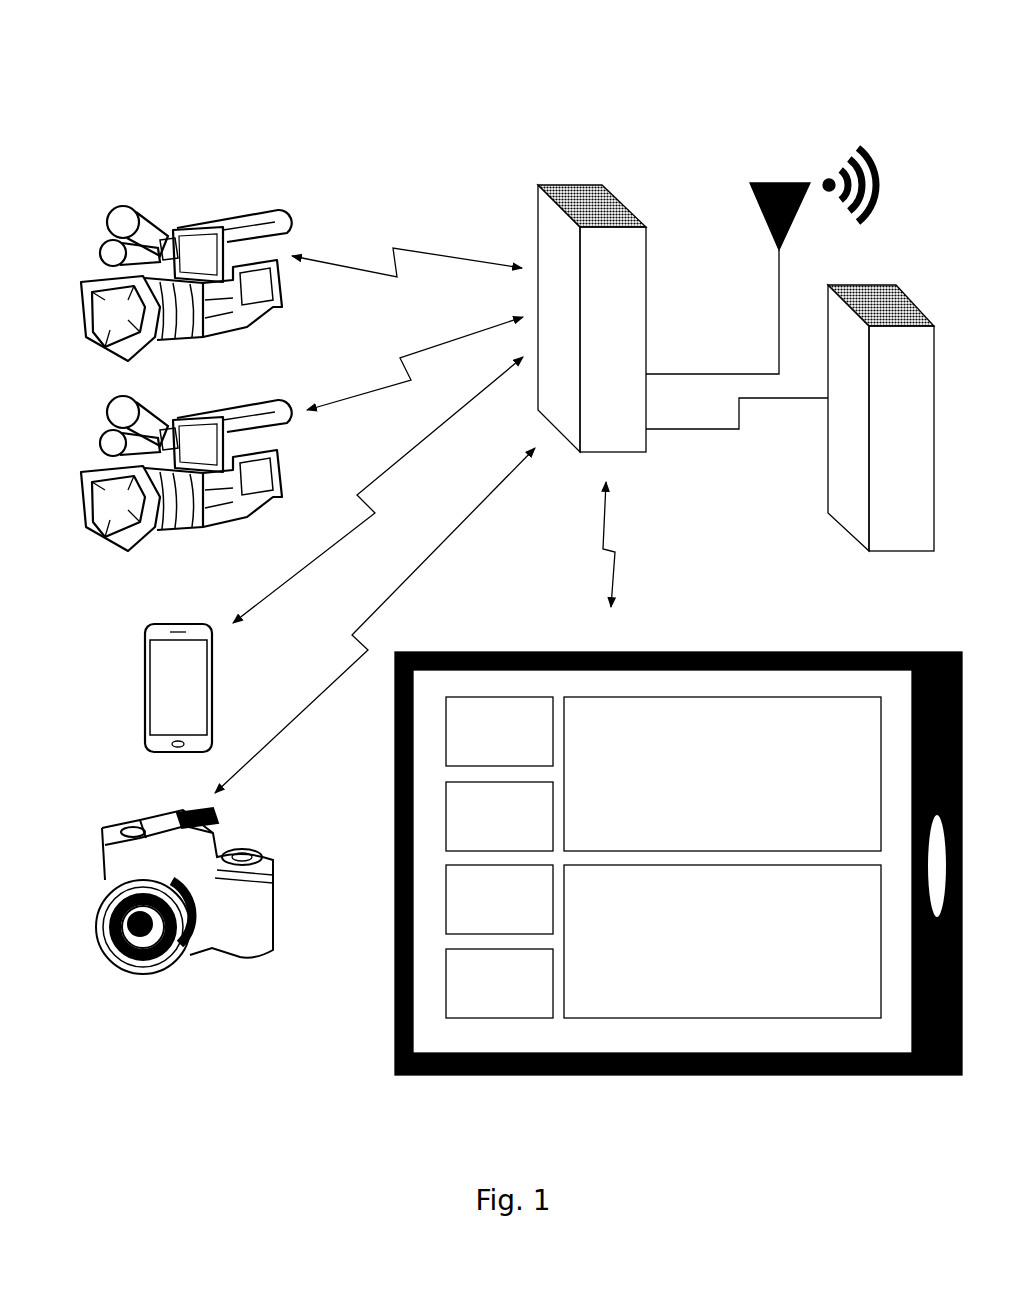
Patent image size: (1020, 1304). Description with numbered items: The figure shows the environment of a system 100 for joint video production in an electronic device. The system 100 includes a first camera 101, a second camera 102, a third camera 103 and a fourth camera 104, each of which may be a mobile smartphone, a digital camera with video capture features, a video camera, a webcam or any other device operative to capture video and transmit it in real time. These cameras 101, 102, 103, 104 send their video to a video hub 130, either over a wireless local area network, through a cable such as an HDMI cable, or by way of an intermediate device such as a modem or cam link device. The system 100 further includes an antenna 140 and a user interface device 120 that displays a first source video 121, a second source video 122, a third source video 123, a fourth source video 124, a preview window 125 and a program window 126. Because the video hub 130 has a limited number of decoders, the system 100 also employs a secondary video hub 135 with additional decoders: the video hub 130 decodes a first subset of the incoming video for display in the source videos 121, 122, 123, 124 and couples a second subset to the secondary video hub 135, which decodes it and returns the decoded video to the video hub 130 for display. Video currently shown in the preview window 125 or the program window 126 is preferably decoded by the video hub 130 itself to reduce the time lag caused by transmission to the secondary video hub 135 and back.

The system 100 is at (533, 45).
The first camera 101 is at (160, 210).
The second camera 102 is at (152, 407).
The third camera 103 is at (177, 617).
The fourth camera 104 is at (133, 803).
The user interface device 120 is at (678, 830).
The first source video 121 is at (499, 731).
The second source video 122 is at (499, 816).
The third source video 123 is at (499, 899).
The fourth source video 124 is at (499, 983).
The preview window 125 is at (722, 774).
The program window 126 is at (722, 941).
The video hub 130 is at (592, 318).
The secondary video hub 135 is at (881, 418).
The antenna 140 is at (780, 172).